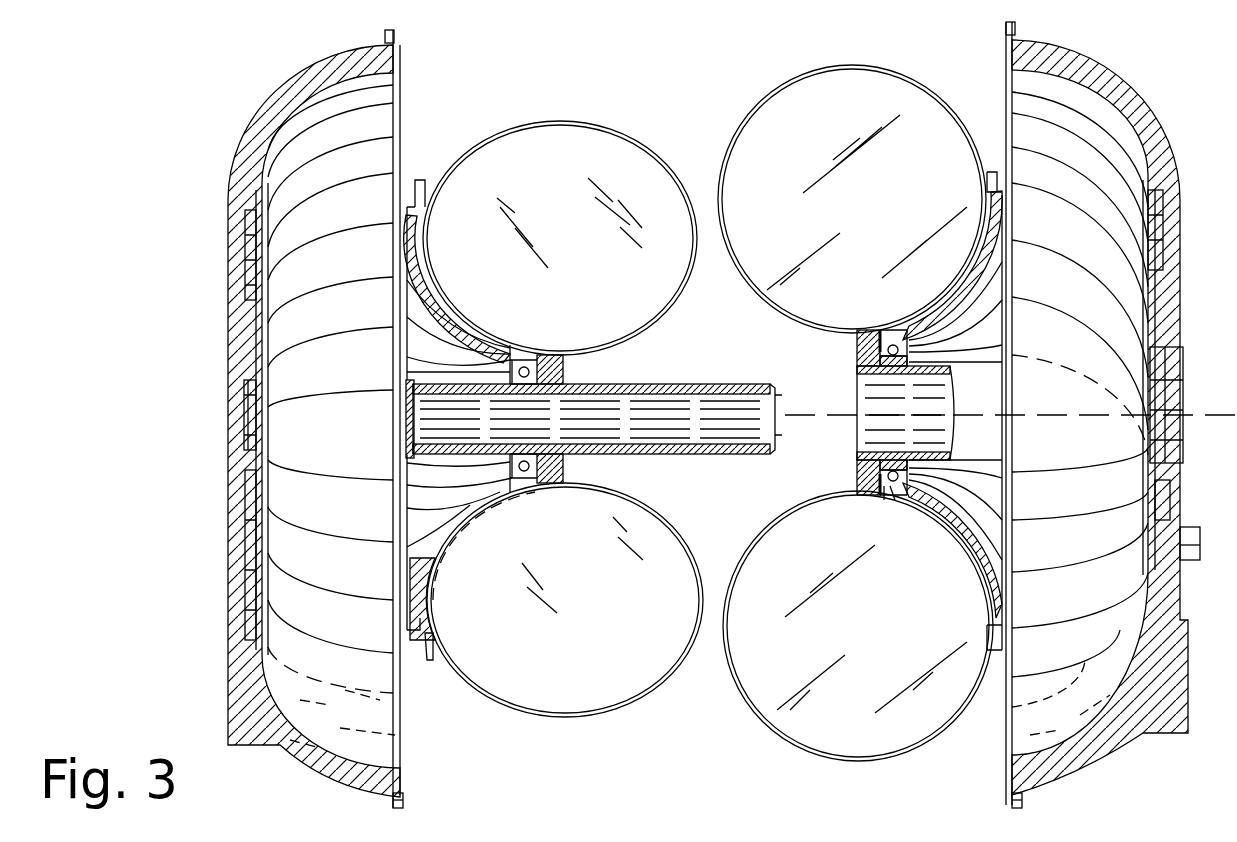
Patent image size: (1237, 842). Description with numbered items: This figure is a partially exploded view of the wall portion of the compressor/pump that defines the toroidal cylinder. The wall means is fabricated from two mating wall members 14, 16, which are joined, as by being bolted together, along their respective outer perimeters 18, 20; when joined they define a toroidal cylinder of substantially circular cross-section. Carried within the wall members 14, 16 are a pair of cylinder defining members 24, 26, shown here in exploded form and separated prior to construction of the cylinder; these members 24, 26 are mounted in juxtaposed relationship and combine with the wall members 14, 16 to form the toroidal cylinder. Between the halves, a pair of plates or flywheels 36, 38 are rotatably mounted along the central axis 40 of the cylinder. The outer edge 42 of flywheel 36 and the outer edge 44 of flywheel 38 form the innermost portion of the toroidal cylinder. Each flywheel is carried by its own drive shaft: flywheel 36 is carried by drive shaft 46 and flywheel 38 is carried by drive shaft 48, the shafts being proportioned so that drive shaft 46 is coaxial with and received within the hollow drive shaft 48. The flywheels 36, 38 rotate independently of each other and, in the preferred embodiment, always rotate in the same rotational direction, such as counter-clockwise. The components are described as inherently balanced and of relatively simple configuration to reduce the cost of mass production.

The wall member 14 is at (383, 58).
The wall member 16 is at (1020, 48).
The outer perimeter 18 is at (405, 803).
The outer perimeter 20 is at (1012, 803).
The cylinder defining member 24 is at (447, 500).
The cylinder defining member 26 is at (993, 475).
The flywheel 36 is at (560, 380).
The flywheel 38 is at (855, 480).
The central axis 40 is at (805, 412).
The outer edge 42 is at (883, 500).
The outer edge 44 is at (548, 484).
The drive shaft 46 is at (648, 385).
The drive shaft 48 is at (857, 362).